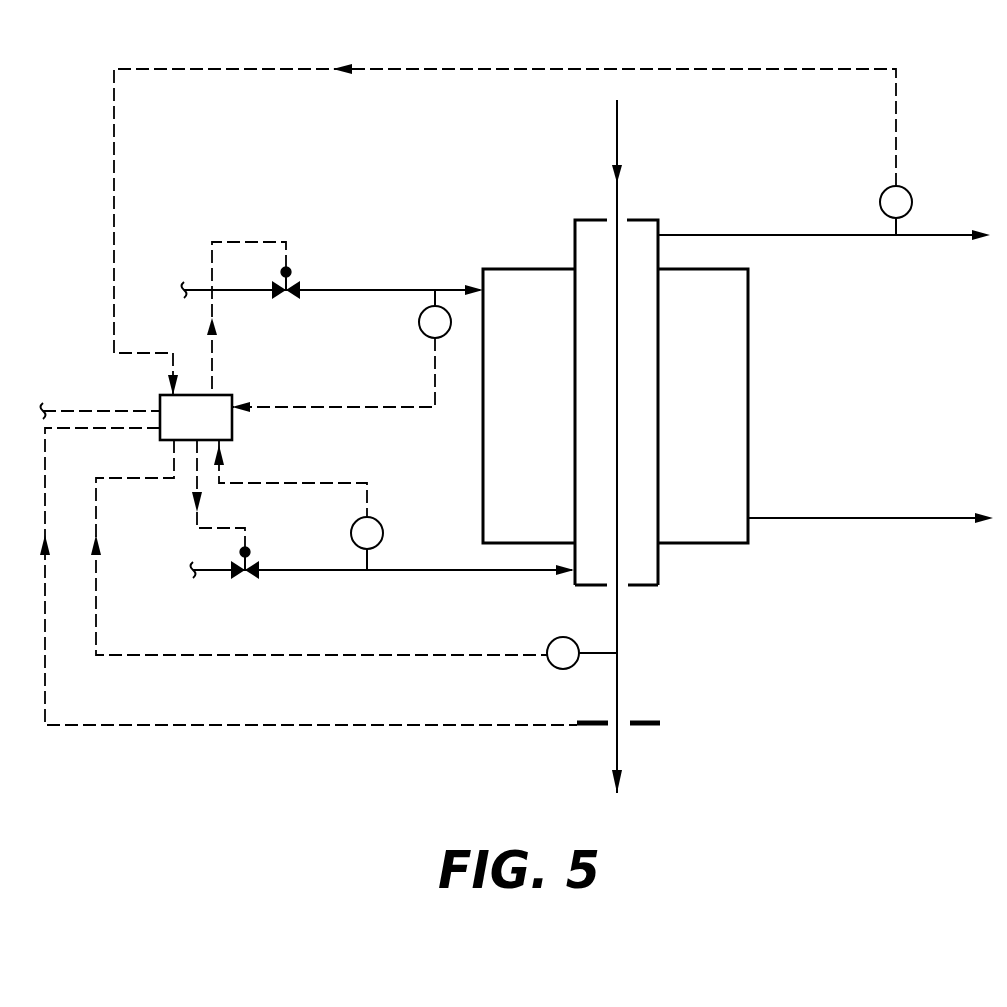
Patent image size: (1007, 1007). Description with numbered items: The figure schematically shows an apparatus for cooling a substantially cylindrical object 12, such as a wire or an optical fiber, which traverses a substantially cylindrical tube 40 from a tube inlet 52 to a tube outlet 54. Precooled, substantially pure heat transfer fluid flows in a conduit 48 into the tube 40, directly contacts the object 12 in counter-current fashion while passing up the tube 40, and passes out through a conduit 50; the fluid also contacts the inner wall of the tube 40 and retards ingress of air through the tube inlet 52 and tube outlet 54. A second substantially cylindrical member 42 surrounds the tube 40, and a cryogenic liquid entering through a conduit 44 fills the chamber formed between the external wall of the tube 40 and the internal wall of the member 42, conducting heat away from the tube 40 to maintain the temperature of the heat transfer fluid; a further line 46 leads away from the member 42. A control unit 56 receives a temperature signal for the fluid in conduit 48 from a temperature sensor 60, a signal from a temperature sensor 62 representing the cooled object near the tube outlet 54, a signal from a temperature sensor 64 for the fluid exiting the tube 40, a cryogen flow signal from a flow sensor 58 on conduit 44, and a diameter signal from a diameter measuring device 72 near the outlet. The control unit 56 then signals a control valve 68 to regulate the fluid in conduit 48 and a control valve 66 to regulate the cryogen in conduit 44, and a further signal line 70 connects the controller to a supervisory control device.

The object 12 is at (618, 130).
The substantially cylindrical tube 40 is at (660, 365).
The second substantially cylindrical member 42 is at (748, 330).
The conduit 44 is at (380, 290).
The lower outlet line 46 is at (847, 518).
The conduit 48 is at (390, 571).
The conduit 50 is at (783, 235).
The tube inlet 52 is at (642, 218).
The tube outlet 54 is at (643, 587).
The controller C3 56 is at (220, 395).
The flow sensor 58 is at (418, 333).
The temperature sensor 60 is at (383, 525).
The temperature sensor 62 is at (557, 675).
The temperature sensor 64 is at (910, 193).
The control valve 66 is at (292, 275).
The control valve 68 is at (255, 552).
The signal line 70 is at (108, 410).
The diameter measuring device 72 is at (590, 727).